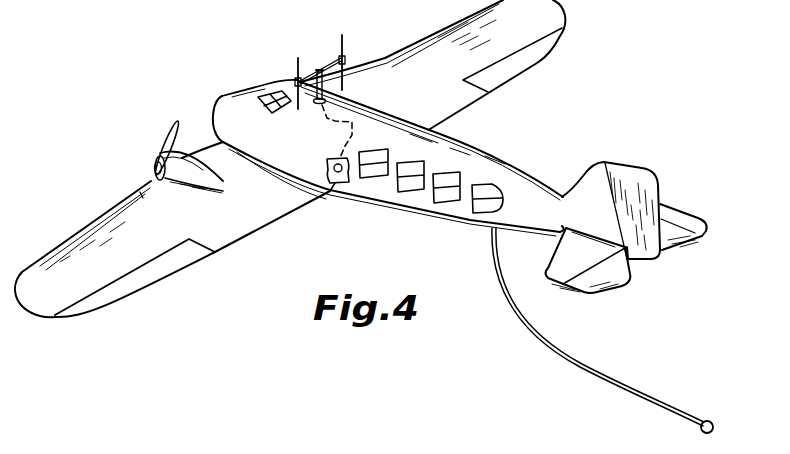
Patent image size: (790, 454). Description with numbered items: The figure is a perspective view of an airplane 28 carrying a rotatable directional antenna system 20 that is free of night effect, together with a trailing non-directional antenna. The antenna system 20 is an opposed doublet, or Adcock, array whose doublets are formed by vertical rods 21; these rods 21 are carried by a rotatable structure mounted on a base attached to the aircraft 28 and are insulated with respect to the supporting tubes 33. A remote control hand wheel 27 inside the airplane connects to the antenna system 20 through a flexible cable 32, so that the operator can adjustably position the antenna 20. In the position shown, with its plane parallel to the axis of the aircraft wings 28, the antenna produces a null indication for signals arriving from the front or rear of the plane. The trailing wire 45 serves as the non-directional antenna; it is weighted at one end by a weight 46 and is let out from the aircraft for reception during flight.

The antenna system 20 is at (293, 45).
The vertical rods 21 is at (296, 62).
The supporting tubes 33 is at (323, 68).
The flexible cable 32 is at (326, 131).
The remote control hand wheel 27 is at (330, 193).
The airplane 28 is at (274, 214).
The trailing wire 45 is at (540, 336).
The weight 46 is at (714, 426).